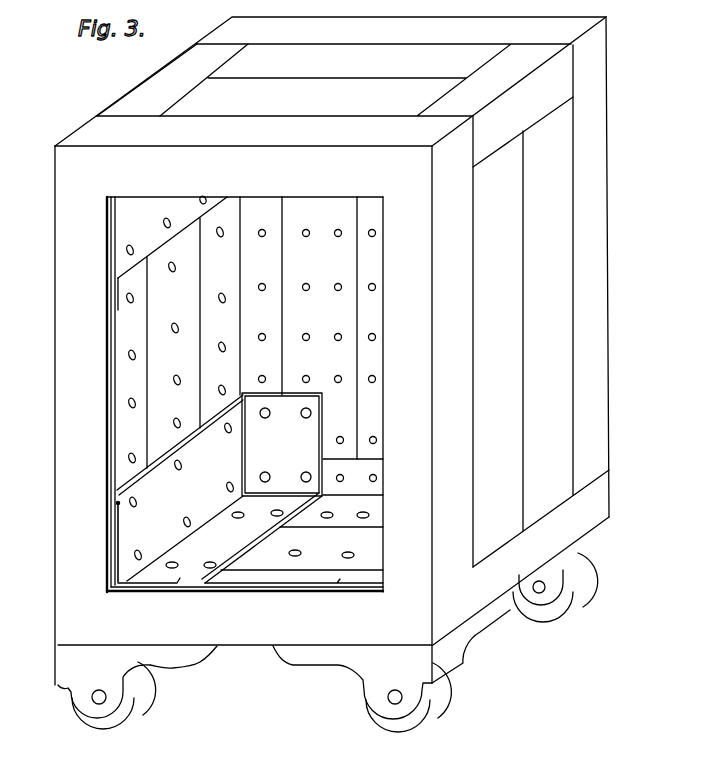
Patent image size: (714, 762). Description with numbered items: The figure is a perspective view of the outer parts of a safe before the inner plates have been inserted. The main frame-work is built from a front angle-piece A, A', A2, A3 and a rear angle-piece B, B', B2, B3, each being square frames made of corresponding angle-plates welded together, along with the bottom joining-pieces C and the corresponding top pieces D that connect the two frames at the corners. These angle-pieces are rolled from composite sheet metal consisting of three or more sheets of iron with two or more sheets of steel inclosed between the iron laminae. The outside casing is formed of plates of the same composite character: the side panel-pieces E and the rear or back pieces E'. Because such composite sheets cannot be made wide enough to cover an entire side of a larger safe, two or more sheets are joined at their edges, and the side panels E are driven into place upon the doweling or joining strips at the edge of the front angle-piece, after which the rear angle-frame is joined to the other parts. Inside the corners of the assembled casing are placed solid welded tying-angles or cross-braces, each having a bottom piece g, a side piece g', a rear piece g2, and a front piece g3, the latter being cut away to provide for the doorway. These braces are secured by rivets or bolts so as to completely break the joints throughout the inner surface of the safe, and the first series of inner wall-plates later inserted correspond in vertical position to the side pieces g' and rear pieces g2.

The front angle-piece A is at (243, 171).
The front angle-piece A' is at (407, 414).
The front angle-piece A2 is at (245, 611).
The front angle-piece A3 is at (86, 415).
The rear angle-piece B is at (330, 81).
The rear angle-piece B' is at (591, 267).
The rear angle-piece B2 is at (338, 510).
The rear angle-piece B3 is at (253, 296).
The bottom joining-piece C is at (521, 557).
The top piece D is at (351, 92).
The side panel-piece E is at (335, 331).
The rear or back piece E' is at (396, 341).
The bottom piece g is at (224, 538).
The side piece g' is at (180, 478).
The rear piece g2 is at (282, 444).
The front piece g3 is at (122, 532).